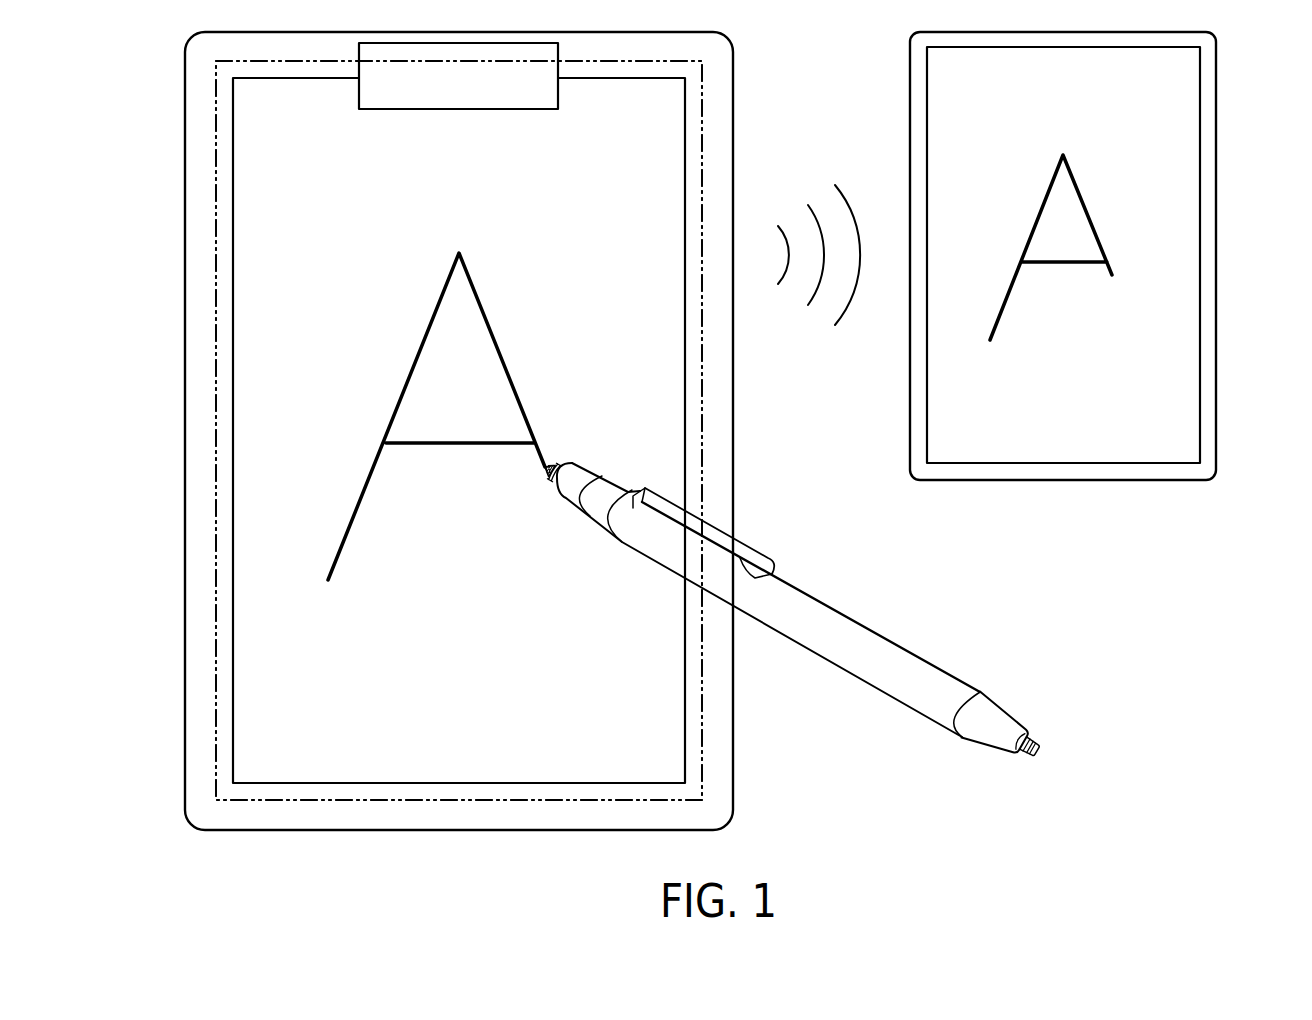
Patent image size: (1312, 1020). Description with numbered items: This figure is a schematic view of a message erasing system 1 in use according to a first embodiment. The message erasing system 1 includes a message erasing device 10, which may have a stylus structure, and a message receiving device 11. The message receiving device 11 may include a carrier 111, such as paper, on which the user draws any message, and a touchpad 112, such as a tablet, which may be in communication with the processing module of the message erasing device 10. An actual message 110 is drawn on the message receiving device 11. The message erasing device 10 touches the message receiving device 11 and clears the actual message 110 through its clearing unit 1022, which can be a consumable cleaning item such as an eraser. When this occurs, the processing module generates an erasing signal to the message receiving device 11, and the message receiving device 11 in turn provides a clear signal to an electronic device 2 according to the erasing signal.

The message erasing system 1 is at (186, 362).
The message receiving device 11 is at (715, 405).
The carrier 111 is at (257, 252).
The touchpad 112 is at (214, 148).
The actual message 110 is at (498, 348).
The message erasing device 10 is at (837, 623).
The clearing unit 1022 is at (543, 470).
The electronic device 2 is at (1218, 230).